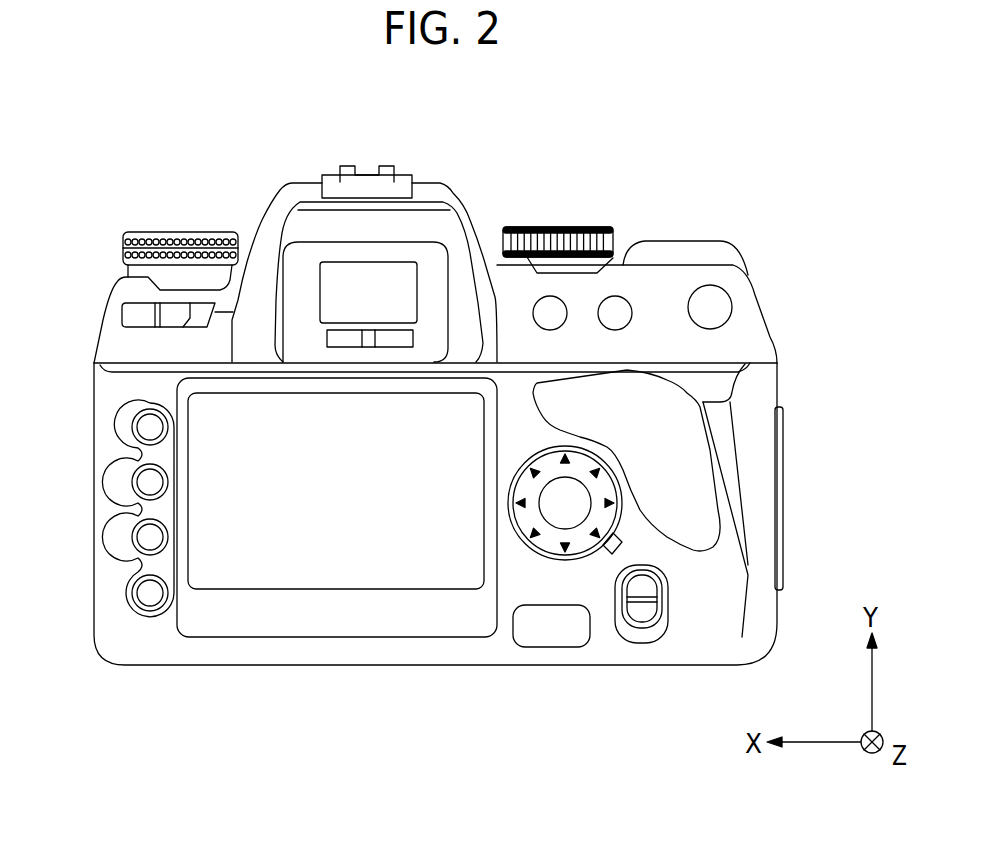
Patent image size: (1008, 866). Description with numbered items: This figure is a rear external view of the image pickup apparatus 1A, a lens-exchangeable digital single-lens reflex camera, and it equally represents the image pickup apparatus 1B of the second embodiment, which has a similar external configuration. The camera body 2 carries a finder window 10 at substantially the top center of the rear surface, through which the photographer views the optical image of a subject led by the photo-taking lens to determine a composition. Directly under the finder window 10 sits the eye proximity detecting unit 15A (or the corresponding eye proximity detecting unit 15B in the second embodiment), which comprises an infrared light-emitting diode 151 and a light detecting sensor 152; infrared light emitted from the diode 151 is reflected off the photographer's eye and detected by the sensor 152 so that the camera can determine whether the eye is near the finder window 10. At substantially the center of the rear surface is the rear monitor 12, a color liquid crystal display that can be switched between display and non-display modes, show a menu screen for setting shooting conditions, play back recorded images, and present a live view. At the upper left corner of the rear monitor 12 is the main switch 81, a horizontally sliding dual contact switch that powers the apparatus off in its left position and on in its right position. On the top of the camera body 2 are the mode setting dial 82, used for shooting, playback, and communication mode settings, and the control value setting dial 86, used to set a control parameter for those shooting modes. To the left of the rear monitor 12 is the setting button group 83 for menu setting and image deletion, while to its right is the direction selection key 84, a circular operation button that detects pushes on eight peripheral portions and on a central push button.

The image pickup apparatus 1A is at (112, 135).
The image pickup apparatus 1B is at (464, 453).
The camera body 2 is at (757, 382).
The finder window 10 is at (378, 285).
The rear monitor 12 is at (307, 560).
The eye proximity detecting unit 15A is at (433, 455).
The eye proximity detecting unit 15B is at (368, 389).
The infrared light-emitting diode 151 is at (337, 346).
The light detecting sensor 152 is at (397, 346).
The main switch 81 is at (135, 321).
The mode setting dial 82 is at (560, 226).
The setting button group 83 is at (78, 395).
The direction selection key 84 is at (552, 563).
The control value setting dial 86 is at (185, 231).